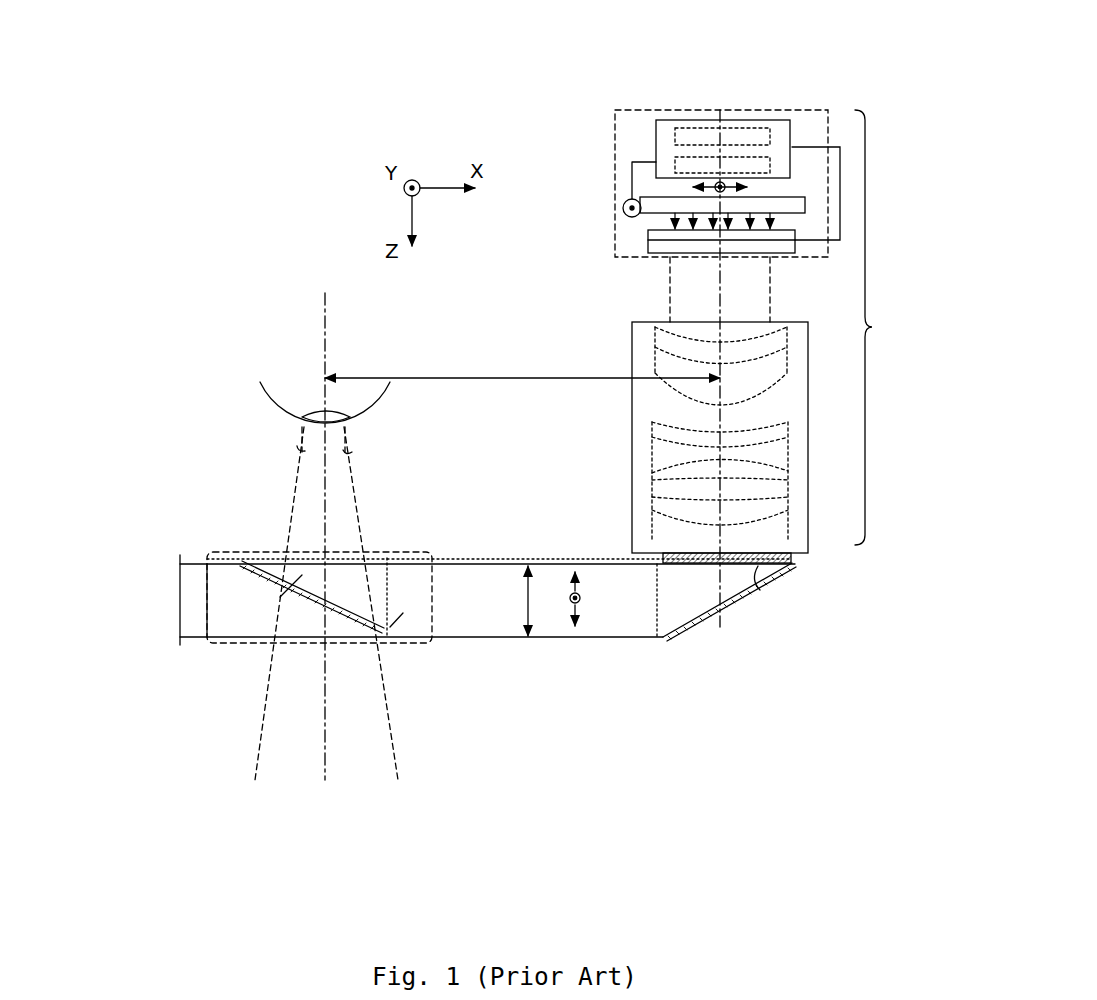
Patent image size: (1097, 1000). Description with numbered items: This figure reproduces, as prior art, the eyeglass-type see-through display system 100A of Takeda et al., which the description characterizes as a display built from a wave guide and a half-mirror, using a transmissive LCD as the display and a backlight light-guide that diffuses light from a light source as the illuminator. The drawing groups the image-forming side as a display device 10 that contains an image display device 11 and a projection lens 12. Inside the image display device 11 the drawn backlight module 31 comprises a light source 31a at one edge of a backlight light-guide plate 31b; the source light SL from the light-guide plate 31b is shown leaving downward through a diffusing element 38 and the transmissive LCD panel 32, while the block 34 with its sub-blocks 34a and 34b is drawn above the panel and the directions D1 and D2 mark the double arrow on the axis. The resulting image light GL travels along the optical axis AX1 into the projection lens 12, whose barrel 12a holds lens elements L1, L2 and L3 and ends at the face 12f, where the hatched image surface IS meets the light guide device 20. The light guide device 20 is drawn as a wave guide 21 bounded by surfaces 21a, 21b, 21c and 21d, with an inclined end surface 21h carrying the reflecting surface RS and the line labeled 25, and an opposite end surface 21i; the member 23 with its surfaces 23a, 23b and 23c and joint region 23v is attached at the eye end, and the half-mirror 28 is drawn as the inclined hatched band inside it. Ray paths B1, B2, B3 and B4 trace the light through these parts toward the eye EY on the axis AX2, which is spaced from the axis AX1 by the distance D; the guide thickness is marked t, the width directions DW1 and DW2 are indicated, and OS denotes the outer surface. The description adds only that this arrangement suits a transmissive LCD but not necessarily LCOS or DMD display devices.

The head-mounted display device 100A is at (803, 75).
The display device 10 is at (879, 327).
The image display device 11 is at (652, 110).
The projection lens 12 is at (600, 350).
The lens barrel 12a is at (632, 406).
The lens end face 12f is at (667, 552).
The light guide device 20 is at (573, 718).
The light guide member 21 is at (640, 628).
The first surface 21a is at (522, 562).
The second surface 21b is at (608, 637).
The third surface 21c is at (678, 630).
The fourth surface 21d is at (245, 605).
The light incident surface 21h is at (795, 566).
The end surface 21i is at (220, 562).
The light transmitting member 23 is at (193, 583).
The first transmitting surface 23a is at (238, 566).
The second transmitting surface 23b is at (293, 638).
The third transmitting surface 23c is at (336, 602).
The joint region 23v is at (302, 618).
The reflecting film 25 is at (728, 604).
The half mirror layer 28 is at (293, 583).
The illumination device 31 is at (600, 190).
The light source 31a is at (623, 208).
The light guide plate 31b is at (655, 215).
The liquid crystal display device 32 is at (650, 242).
The drive control unit 34 is at (695, 120).
The display drive circuit 34a is at (735, 145).
The light source drive circuit 34b is at (770, 128).
The diffusion plate 38 is at (660, 222).
The first direction D1 is at (718, 186).
The second direction D2 is at (722, 186).
The source light SL is at (777, 208).
The optical axis of projection lens AX1 is at (718, 291).
The optical axis of eye side AX2 is at (323, 333).
The image light GL is at (775, 291).
The first lens L1 is at (655, 345).
The second lens L2 is at (655, 455).
The third lens L3 is at (655, 500).
The image surface IS is at (663, 553).
The eye EY is at (278, 405).
The distance D is at (522, 365).
The thickness t is at (536, 601).
The first width direction DW1 is at (570, 590).
The second width direction DW2 is at (568, 614).
The reflecting surface RS is at (750, 596).
The outside surface OS is at (280, 560).
The first light beam B1 is at (743, 594).
The second light beam B2 is at (515, 638).
The third light beam B3 is at (390, 598).
The fourth light beam B4 is at (395, 637).